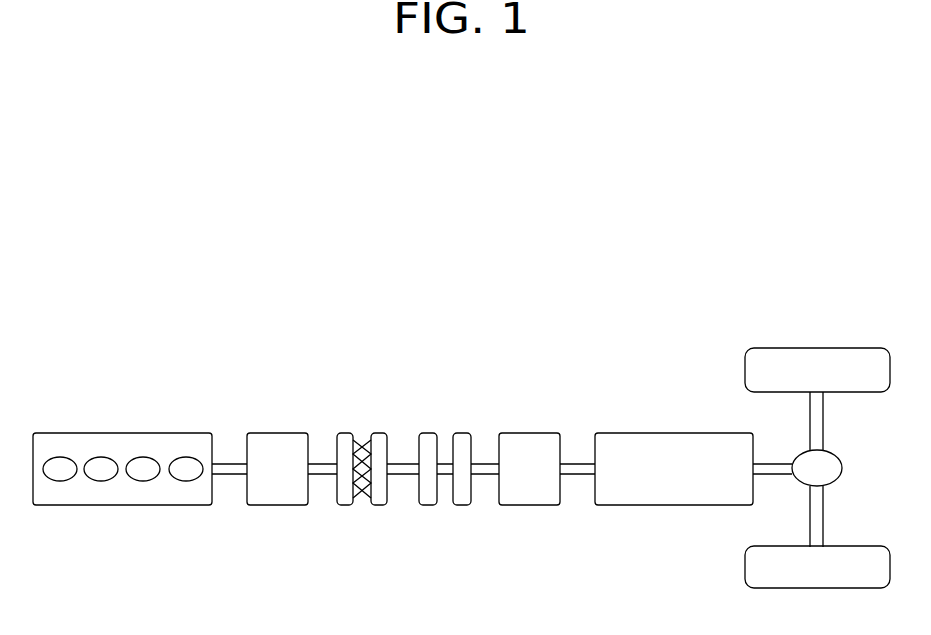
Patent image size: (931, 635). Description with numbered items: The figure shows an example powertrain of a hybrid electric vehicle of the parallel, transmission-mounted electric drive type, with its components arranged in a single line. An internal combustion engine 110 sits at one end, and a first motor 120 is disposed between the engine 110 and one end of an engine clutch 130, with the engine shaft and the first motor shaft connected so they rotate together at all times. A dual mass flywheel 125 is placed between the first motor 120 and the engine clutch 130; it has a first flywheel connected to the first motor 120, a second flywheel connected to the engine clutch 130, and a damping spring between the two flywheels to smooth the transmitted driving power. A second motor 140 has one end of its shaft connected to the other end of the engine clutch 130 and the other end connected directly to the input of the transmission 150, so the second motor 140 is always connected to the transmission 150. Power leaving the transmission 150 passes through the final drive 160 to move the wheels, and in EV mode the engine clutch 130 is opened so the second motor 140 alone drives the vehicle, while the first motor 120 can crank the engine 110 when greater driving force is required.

The internal combustion engine 110 is at (110, 432).
The first motor 120 is at (278, 432).
The dual mass flywheel 125 is at (378, 432).
The engine clutch 130 is at (461, 432).
The second motor 140 is at (527, 432).
The transmission 150 is at (663, 432).
The final drive 160 is at (832, 454).